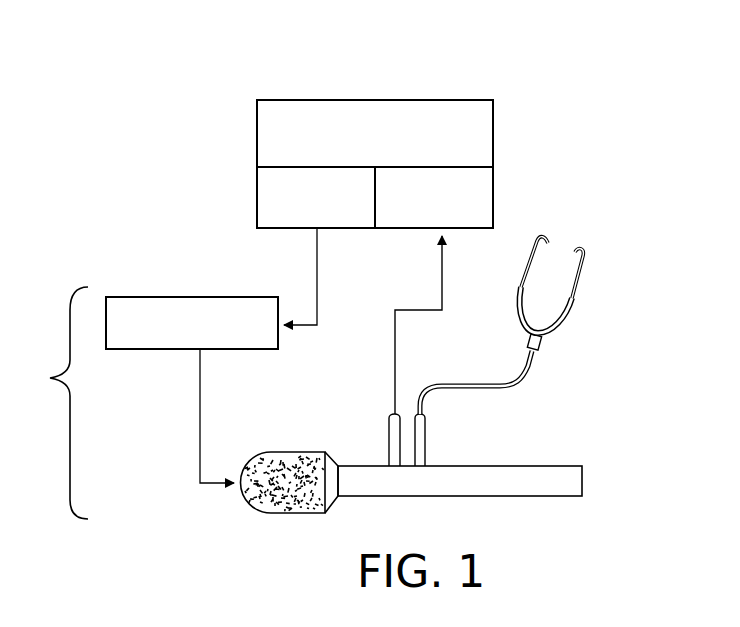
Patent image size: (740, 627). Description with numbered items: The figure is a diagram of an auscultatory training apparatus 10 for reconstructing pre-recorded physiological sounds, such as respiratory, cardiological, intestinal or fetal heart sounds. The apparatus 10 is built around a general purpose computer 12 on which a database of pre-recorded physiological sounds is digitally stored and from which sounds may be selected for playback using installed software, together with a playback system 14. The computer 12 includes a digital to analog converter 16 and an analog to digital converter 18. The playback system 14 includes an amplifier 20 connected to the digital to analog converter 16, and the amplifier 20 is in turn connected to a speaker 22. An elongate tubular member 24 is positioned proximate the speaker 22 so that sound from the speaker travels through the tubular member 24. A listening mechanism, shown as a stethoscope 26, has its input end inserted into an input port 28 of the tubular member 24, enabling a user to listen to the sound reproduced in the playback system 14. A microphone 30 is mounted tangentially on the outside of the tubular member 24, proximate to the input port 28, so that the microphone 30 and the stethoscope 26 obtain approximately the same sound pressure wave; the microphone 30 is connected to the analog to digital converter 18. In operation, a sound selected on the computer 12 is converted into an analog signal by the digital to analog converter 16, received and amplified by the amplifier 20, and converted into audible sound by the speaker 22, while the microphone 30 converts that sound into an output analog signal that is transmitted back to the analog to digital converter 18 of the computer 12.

The apparatus 10 is at (546, 92).
The general purpose computer 12 is at (459, 100).
The playback system 14 is at (50, 403).
The digital to analog converter 16 is at (257, 205).
The analog to digital converter 18 is at (493, 190).
The amplifier 20 is at (152, 297).
The speaker 22 is at (283, 452).
The elongate tubular member 24 is at (456, 496).
The stethoscope 26 is at (515, 385).
The input port 28 is at (425, 437).
The microphone 30 is at (390, 413).